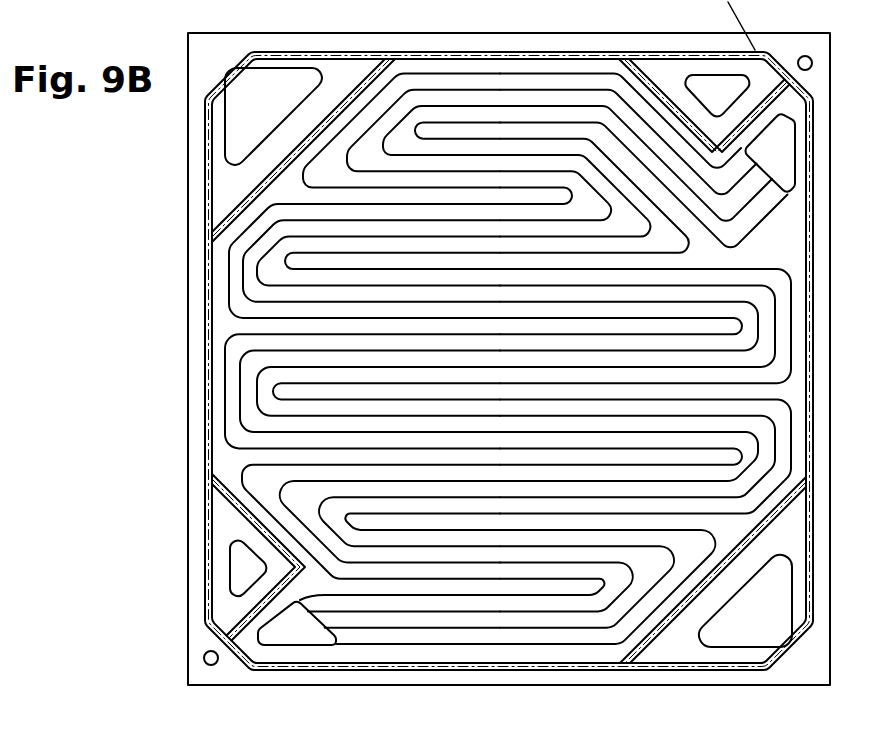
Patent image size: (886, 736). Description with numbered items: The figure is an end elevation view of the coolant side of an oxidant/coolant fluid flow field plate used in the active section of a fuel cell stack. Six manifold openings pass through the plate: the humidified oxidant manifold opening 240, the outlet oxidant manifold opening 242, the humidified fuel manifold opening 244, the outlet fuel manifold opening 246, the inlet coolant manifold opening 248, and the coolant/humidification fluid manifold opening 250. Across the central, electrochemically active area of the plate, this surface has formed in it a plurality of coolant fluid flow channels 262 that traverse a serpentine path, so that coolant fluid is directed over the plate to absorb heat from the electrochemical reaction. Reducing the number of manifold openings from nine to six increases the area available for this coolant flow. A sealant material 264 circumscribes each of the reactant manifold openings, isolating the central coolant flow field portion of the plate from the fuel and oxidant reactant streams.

The humidified oxidant manifold opening 240 is at (725, 640).
The outlet oxidant manifold opening 242 is at (250, 113).
The humidified fuel manifold opening 244 is at (237, 558).
The outlet fuel manifold opening 246 is at (700, 87).
The inlet coolant manifold opening 248 is at (781, 128).
The coolant/humidification fluid manifold opening 250 is at (272, 636).
The coolant fluid flow channels 262 is at (505, 122).
The sealant material 264 is at (353, 25).